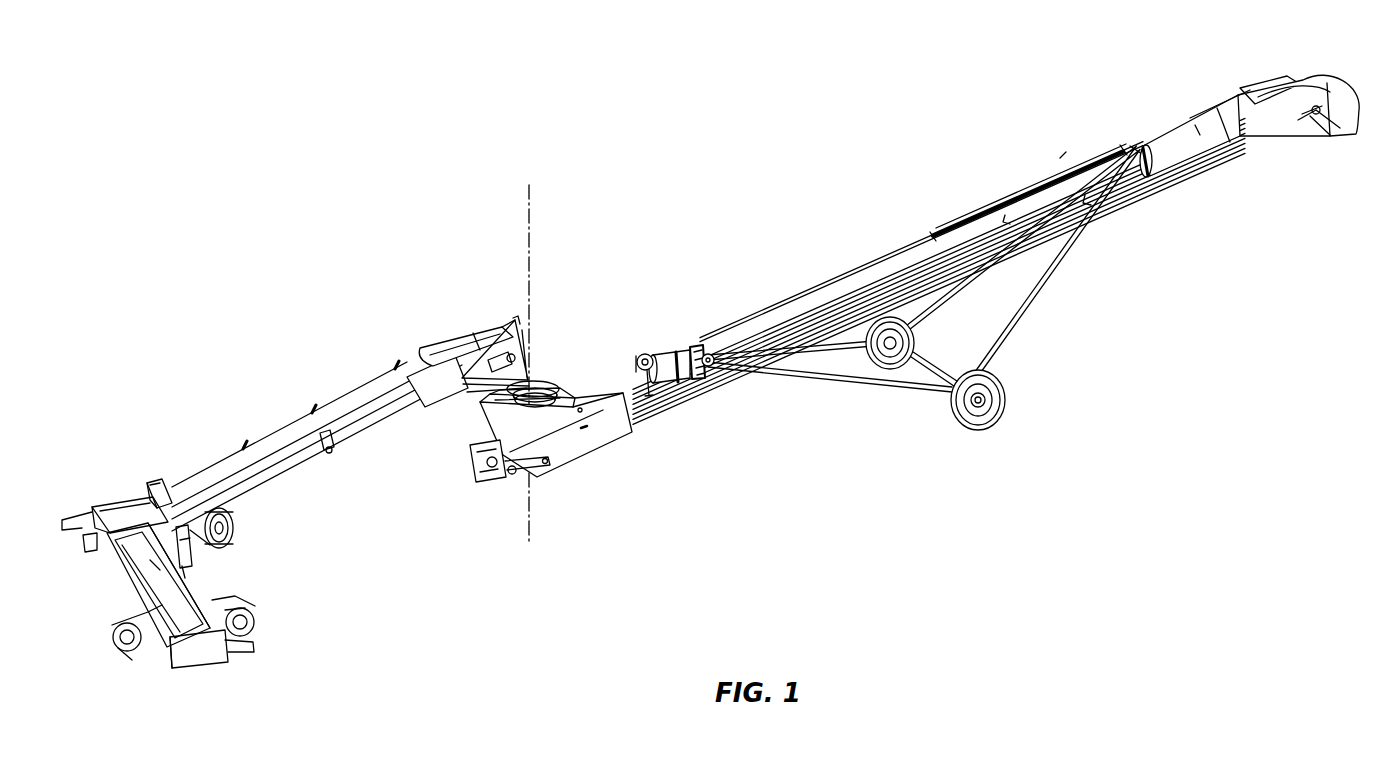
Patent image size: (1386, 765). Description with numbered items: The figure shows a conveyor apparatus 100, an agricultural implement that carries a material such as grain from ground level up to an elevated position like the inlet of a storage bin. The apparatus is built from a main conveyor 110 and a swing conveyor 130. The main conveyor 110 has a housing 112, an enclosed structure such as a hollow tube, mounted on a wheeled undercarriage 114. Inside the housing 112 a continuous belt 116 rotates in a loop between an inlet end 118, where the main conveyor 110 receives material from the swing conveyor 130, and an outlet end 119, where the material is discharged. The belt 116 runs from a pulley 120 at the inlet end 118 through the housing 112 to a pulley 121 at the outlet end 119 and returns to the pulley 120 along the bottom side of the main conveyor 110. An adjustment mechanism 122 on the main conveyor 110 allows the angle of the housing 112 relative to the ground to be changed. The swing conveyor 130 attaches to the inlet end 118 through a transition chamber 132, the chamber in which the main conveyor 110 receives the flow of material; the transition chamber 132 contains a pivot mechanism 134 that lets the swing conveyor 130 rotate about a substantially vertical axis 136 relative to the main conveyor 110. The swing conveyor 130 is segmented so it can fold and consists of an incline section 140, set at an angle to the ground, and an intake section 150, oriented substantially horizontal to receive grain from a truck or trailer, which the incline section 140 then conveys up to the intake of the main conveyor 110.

The conveyor apparatus 100 is at (252, 177).
The main conveyor 110 is at (865, 243).
The housing 112 is at (1162, 142).
The wheeled undercarriage 114 is at (1043, 293).
The belt 116 is at (1168, 183).
The inlet end 118 is at (566, 480).
The outlet end 119 is at (1311, 134).
The pulley 120 is at (510, 476).
The pulley 121 is at (1314, 108).
The adjustment mechanism 122 is at (647, 356).
The swing conveyor 130 is at (305, 526).
The transition chamber 132 is at (514, 430).
The pivot mechanism 134 is at (560, 393).
The axis 136 is at (532, 238).
The incline section 140 is at (350, 400).
The intake section 150 is at (200, 580).